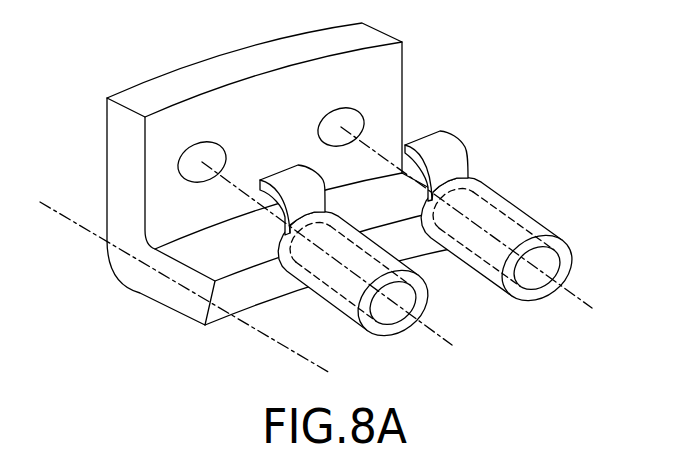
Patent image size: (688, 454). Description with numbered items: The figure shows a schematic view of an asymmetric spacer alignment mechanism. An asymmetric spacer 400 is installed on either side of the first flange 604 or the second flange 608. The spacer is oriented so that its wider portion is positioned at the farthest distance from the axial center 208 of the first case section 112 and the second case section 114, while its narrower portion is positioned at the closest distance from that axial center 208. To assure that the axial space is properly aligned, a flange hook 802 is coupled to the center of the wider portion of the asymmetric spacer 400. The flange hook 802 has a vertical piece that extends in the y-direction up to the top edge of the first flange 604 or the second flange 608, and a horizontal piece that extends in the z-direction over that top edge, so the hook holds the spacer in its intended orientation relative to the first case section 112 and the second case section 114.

The first flange 604 is at (252, 173).
The second flange 608 is at (252, 184).
The first case section 112 is at (252, 259).
The second case section 114 is at (197, 288).
The axial center 208 is at (68, 222).
The asymmetric spacer 400 is at (532, 228).
The flange hook 802 is at (445, 155).